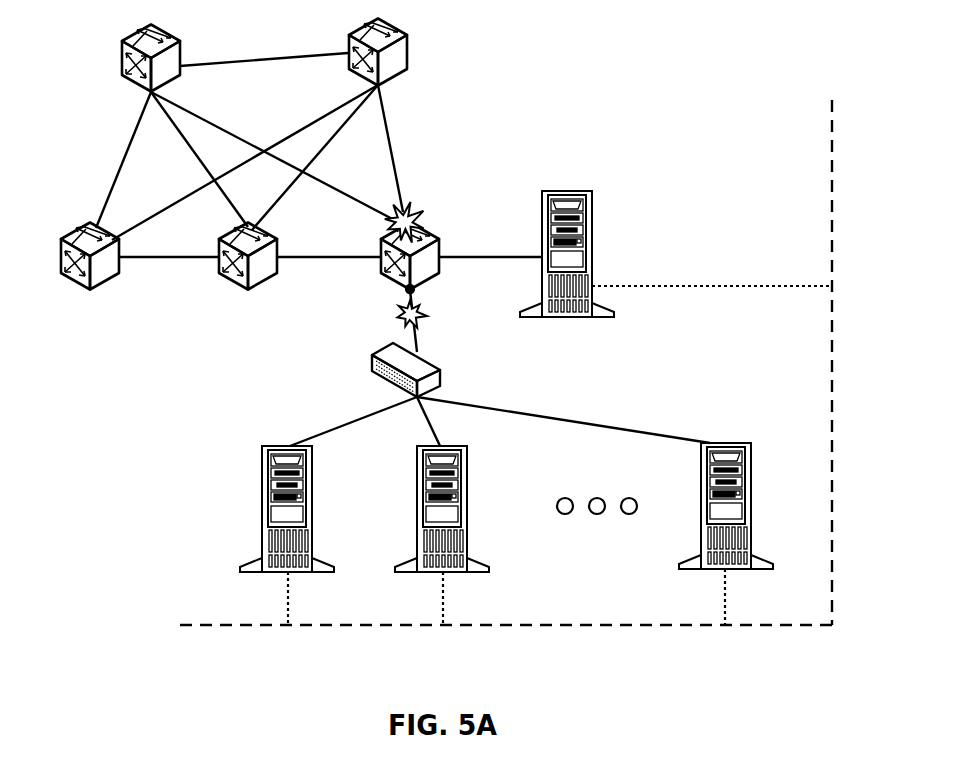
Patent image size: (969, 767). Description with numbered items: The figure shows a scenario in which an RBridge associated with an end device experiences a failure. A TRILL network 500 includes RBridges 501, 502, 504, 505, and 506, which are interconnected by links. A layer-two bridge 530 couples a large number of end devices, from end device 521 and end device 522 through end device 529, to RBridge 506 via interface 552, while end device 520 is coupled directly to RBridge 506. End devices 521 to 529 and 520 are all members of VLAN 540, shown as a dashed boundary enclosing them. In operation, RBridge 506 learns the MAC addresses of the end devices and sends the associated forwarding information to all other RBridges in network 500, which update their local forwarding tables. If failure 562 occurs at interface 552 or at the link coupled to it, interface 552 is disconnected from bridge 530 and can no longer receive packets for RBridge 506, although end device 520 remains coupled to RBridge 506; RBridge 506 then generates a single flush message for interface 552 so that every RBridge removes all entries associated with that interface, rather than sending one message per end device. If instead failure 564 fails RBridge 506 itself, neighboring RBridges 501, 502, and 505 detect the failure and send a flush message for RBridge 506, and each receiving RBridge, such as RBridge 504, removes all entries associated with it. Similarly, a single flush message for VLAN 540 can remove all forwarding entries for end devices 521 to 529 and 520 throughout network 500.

The TRILL network 500 is at (467, 57).
The RBridge 501 is at (128, 78).
The RBridge 502 is at (355, 77).
The RBridge 504 is at (68, 278).
The RBridge 505 is at (222, 277).
The RBridge 506 is at (386, 283).
The end device 520 is at (592, 222).
The end device 521 is at (312, 478).
The end device 522 is at (467, 478).
The end device 529 is at (751, 475).
The layer-2 bridge 530 is at (441, 375).
The VLAN 540 is at (511, 348).
The interface 552 is at (416, 290).
The failure 562 is at (398, 312).
The failure 564 is at (412, 208).